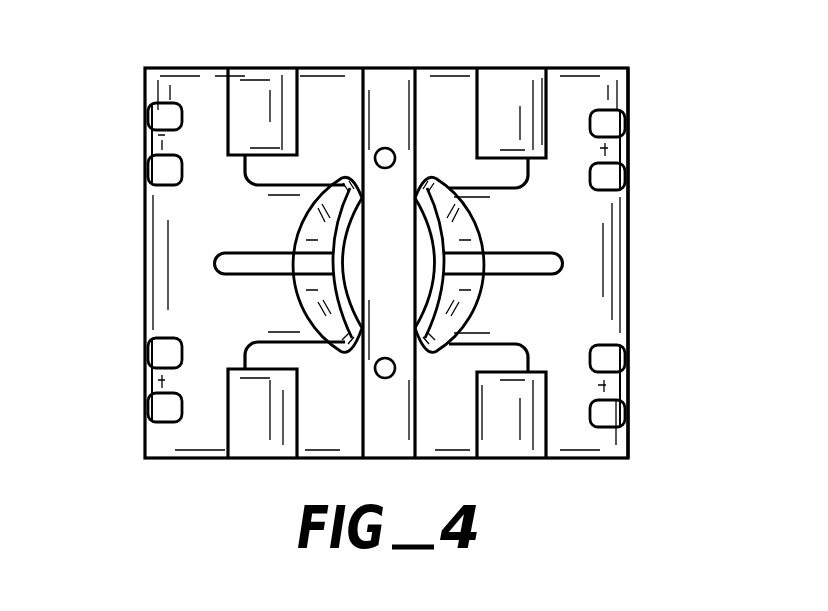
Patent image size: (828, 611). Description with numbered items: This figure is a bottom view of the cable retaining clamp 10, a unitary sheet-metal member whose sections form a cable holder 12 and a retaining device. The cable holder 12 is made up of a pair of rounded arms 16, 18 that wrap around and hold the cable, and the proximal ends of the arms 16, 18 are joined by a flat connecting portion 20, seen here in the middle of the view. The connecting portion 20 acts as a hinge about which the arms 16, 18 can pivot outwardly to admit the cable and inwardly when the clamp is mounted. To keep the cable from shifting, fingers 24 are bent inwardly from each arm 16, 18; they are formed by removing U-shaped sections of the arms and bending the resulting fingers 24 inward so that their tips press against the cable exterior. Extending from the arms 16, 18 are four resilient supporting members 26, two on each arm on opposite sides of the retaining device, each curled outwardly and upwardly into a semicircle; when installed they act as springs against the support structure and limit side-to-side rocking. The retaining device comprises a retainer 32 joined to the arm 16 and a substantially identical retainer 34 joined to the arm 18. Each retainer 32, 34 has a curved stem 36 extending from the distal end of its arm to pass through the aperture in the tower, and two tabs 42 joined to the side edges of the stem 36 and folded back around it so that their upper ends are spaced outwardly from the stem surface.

The cable retaining clamp 10 is at (122, 238).
The cable holder 12 is at (640, 244).
The arm 16 is at (157, 298).
The arm 18 is at (607, 317).
The connecting portion 20 is at (402, 442).
The finger 24 is at (163, 143).
The resilient supporting member 26 is at (522, 106).
The retainer 32 is at (296, 223).
The retainer 34 is at (485, 220).
The stem 36 is at (432, 268).
The tab 42 is at (310, 295).